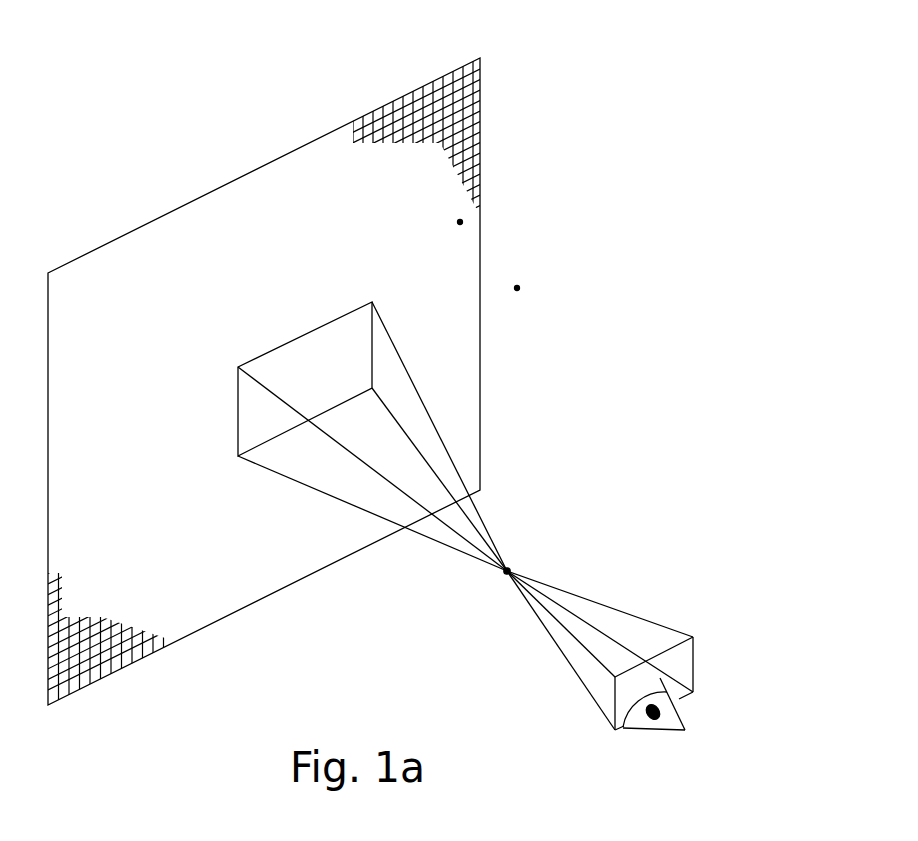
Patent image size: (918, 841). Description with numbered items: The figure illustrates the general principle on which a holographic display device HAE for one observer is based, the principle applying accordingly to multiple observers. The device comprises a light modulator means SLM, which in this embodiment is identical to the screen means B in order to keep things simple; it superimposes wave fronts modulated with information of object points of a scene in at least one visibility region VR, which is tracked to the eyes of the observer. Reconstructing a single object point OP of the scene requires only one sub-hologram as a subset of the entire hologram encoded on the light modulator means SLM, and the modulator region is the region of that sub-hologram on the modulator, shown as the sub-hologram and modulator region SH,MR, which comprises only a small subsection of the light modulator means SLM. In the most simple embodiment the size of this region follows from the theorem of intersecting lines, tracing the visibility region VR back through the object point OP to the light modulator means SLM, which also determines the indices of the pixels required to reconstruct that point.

The light modulator means SLM is at (264, 384).
The screen means B is at (460, 222).
The holographic display device HAE is at (517, 288).
The sub-hologram and modulator region SH,MR is at (353, 323).
The object point OP is at (509, 568).
The visibility region VR is at (686, 651).